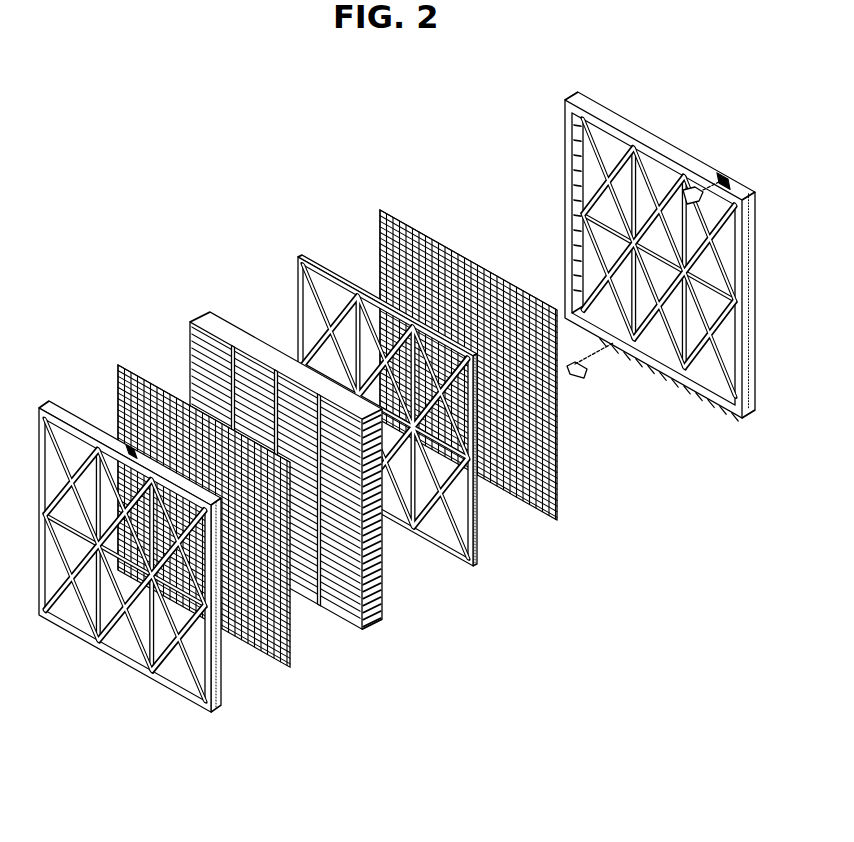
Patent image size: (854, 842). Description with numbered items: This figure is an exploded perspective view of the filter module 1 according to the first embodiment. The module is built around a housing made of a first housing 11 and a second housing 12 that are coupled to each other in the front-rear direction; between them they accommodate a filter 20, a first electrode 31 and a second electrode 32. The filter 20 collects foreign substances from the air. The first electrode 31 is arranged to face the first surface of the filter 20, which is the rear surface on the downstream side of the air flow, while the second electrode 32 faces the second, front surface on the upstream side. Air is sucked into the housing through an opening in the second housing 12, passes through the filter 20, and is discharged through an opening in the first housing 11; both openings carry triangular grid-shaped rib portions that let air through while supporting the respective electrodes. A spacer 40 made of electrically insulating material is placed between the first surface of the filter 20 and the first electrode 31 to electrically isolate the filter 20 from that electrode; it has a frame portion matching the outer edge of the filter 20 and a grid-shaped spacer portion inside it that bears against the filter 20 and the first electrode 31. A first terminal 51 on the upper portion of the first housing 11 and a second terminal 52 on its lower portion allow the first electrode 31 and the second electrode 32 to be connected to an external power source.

The filter module 1 is at (302, 162).
The first housing 11 is at (635, 289).
The second housing 12 is at (161, 581).
The filter 20 is at (389, 633).
The first electrode 31 is at (559, 500).
The second electrode 32 is at (297, 670).
The spacer 40 is at (414, 434).
The first terminal 51 is at (703, 184).
The second terminal 52 is at (580, 379).